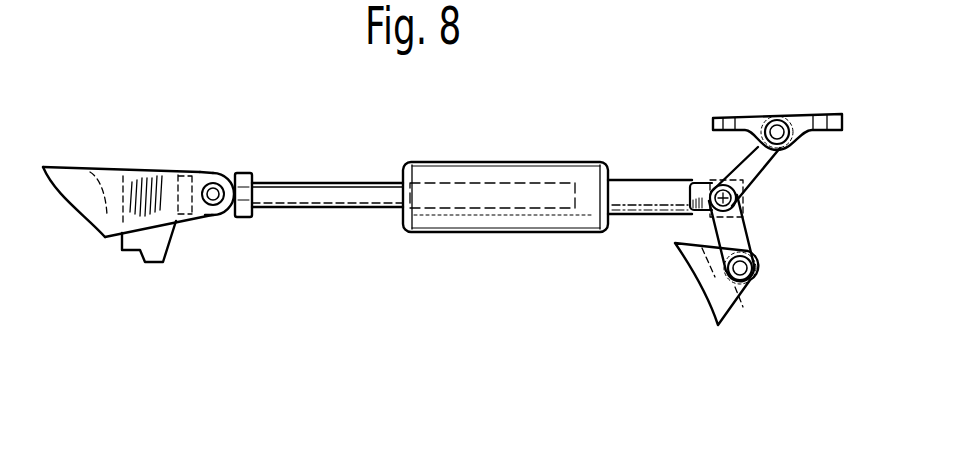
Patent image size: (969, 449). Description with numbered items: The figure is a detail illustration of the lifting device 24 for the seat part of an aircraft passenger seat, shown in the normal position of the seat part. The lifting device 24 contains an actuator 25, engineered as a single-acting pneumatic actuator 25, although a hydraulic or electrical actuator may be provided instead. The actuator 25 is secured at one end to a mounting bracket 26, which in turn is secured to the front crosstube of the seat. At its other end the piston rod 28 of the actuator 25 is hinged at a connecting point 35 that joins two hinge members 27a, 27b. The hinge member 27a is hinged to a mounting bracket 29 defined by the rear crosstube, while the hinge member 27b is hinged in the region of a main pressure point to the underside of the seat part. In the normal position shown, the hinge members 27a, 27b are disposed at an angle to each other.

The lifting device 24 is at (463, 245).
The actuator 25 is at (490, 215).
The mounting bracket 26 is at (157, 177).
The hinge member 27a is at (738, 233).
The hinge member 27b is at (757, 170).
The piston rod 28 is at (630, 205).
The mounting bracket 29 is at (730, 303).
The connecting point 35 is at (710, 197).